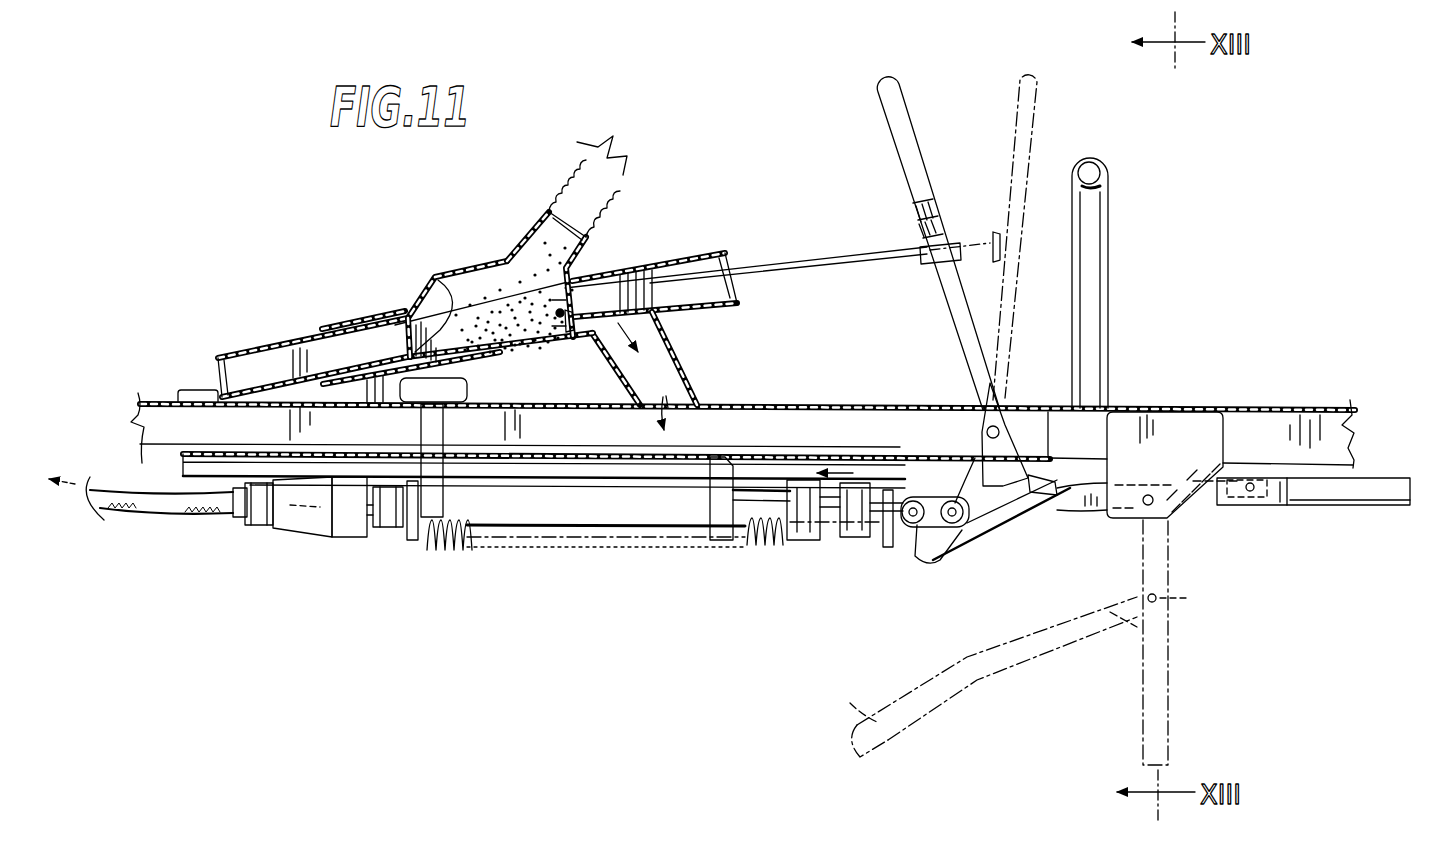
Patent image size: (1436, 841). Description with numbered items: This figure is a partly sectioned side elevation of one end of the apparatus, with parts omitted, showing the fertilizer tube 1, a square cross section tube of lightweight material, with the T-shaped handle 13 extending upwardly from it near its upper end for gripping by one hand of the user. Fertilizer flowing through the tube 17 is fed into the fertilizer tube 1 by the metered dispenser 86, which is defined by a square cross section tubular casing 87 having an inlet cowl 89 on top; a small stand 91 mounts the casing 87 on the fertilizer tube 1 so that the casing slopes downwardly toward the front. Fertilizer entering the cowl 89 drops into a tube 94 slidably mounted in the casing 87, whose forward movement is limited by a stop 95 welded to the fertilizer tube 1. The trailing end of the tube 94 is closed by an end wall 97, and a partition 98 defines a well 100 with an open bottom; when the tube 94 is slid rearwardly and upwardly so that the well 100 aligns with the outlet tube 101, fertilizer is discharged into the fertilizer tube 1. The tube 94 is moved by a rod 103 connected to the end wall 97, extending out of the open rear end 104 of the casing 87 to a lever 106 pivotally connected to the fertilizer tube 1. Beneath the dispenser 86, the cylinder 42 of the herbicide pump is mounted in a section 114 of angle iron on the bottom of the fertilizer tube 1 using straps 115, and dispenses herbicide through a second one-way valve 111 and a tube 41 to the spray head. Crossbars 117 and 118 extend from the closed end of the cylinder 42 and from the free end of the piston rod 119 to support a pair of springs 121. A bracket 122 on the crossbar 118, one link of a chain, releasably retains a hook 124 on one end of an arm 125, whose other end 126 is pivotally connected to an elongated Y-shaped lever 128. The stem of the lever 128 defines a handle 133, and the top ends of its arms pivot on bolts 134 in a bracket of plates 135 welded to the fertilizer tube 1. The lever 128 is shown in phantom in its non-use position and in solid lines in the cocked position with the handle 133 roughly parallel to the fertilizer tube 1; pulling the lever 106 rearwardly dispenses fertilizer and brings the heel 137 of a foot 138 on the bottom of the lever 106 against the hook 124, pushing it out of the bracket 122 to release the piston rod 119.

The fertilizer tube 1 is at (1268, 437).
The T-shaped handle 13 is at (1088, 236).
The tube 17 is at (630, 172).
The tube 41 is at (154, 505).
The cylinder 42 is at (513, 510).
The metered dispenser 86 is at (445, 259).
The tubular casing 87 is at (358, 322).
The inlet cowl 89 is at (490, 265).
The stand 91 is at (478, 383).
The tube 94 is at (257, 352).
The stop 95 is at (192, 392).
The end wall 97 is at (566, 334).
The partition 98 is at (452, 284).
The well 100 is at (570, 290).
The outlet tube 101 is at (688, 368).
The rod 103 is at (790, 270).
The open rear end 104 is at (706, 258).
The lever 106 is at (900, 128).
The second one-way valve 111 is at (310, 515).
The section of angle iron 114 is at (665, 478).
The straps 115 is at (421, 422).
The crossbar 117 is at (408, 548).
The crossbar 118 is at (888, 549).
The piston rod 119 is at (802, 547).
The springs 121 is at (450, 557).
The bracket 122 is at (912, 493).
The hook 124 is at (928, 547).
The arm 125 is at (1030, 522).
The other end of the arm 126 is at (1240, 505).
The Y-shaped lever 128 is at (1193, 598).
The handle 133 is at (1362, 502).
The bolts 134 is at (1148, 495).
The plates 135 is at (1167, 443).
The heel 137 is at (1058, 512).
The foot 138 is at (976, 552).